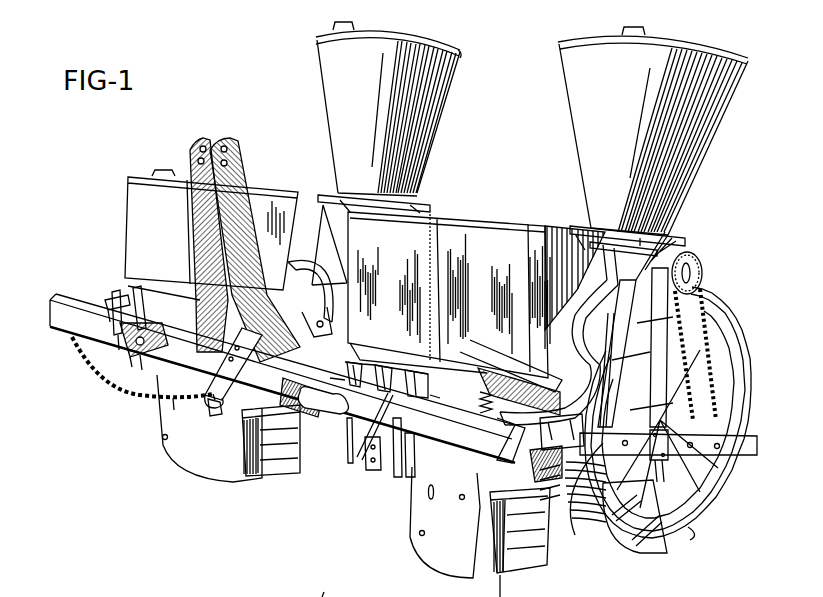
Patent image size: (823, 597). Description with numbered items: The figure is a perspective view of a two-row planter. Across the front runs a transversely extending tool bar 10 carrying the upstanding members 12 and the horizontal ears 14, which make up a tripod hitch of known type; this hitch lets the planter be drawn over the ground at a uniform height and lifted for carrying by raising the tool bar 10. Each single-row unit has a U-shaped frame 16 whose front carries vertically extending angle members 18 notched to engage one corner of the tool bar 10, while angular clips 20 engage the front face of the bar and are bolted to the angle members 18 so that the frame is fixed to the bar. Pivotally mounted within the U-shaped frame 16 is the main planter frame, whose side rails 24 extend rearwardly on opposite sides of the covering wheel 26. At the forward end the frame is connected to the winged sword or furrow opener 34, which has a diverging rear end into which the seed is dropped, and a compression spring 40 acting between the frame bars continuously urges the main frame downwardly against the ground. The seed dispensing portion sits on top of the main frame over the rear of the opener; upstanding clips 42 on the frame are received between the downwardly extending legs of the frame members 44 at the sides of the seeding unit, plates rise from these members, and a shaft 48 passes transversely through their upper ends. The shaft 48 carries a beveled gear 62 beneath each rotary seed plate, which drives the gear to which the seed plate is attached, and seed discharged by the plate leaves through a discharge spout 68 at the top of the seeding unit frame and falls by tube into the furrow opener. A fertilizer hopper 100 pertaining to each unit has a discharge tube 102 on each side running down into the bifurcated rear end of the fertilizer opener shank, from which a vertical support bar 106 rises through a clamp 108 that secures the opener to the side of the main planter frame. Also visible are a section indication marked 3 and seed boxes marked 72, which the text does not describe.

The section line 3 is at (410, 172).
The tool bar 10 is at (64, 318).
The upstanding members 12 is at (238, 152).
The horizontal ears 14 is at (100, 398).
The U-shaped frame 16 is at (458, 458).
The angle members 18 is at (125, 287).
The angular clips 20 is at (106, 305).
The side rails 24 is at (600, 512).
The covering wheel 26 is at (692, 528).
The furrow opener 34 is at (530, 575).
The compression spring 40 is at (476, 435).
The upstanding clips 42 is at (592, 515).
The frame members 44 is at (564, 388).
The shaft 48 is at (611, 340).
The beveled gear 62 is at (590, 312).
The discharge spout 68 is at (326, 588).
The seed box 72 is at (160, 229).
The fertilizer hopper 100 is at (368, 93).
The discharge tube 102 is at (692, 272).
The vertical support bar 106 is at (712, 480).
The clamp 108 is at (662, 443).